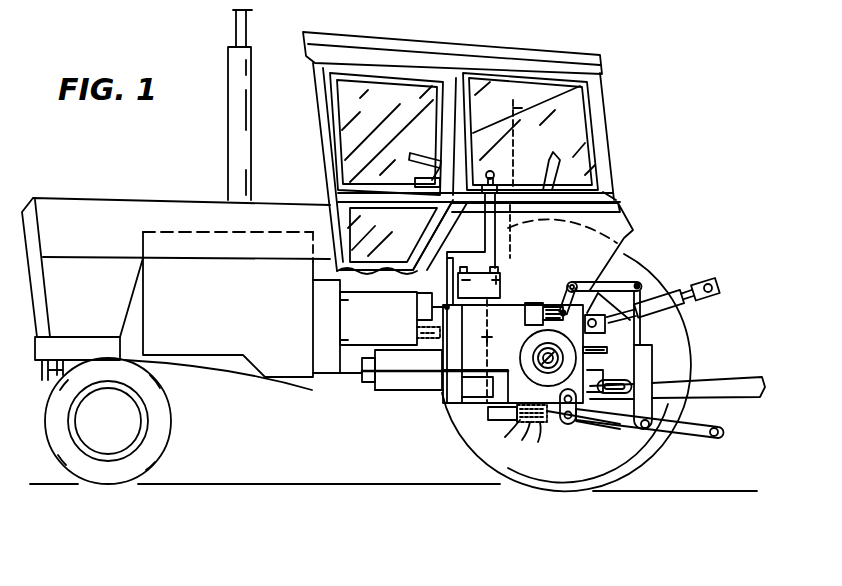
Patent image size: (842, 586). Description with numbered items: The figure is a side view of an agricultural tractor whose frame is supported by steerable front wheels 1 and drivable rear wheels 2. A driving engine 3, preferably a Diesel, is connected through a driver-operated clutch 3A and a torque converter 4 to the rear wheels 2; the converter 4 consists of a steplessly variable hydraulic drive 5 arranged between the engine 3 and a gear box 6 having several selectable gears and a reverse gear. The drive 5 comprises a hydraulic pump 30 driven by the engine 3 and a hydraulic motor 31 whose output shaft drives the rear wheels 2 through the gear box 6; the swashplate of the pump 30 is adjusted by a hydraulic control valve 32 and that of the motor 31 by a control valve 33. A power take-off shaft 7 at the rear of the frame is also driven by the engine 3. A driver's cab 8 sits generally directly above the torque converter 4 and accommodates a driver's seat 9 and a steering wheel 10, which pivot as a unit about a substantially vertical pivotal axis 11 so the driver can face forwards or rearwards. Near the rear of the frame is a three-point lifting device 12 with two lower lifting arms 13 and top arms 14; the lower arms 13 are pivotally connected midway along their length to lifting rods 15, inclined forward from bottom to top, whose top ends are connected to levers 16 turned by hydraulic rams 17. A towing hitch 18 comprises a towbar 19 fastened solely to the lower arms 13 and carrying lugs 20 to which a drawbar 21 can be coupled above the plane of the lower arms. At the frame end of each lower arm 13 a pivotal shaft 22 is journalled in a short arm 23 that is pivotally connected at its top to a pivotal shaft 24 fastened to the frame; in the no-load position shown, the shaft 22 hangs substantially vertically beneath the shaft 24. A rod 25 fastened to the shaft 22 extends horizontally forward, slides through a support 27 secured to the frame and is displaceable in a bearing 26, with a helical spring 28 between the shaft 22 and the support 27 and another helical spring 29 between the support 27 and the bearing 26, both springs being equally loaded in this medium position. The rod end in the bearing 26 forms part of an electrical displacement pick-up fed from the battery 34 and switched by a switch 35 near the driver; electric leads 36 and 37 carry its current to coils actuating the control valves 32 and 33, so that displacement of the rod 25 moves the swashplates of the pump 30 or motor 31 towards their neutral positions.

The front wheels 1 is at (158, 464).
The rear wheels 2 is at (527, 488).
The driving engine 3 is at (227, 366).
The driver-operated clutch 3A is at (327, 375).
The torque converter 4 is at (379, 405).
The steplessly variable hydraulic drive 5 is at (360, 370).
The gear box 6 is at (513, 351).
The power take-off shaft 7 is at (598, 342).
The driver's cab 8 is at (598, 97).
The driver's seat 9 is at (558, 152).
The steering wheel 10 is at (427, 155).
The pivotal axis 11 is at (518, 110).
The three-point lifting device 12 is at (710, 282).
The lower lifting arms 13 is at (717, 437).
The top arms 14 is at (708, 297).
The lifting rods 15 is at (657, 348).
The levers 16 is at (597, 282).
The hydraulic rams 17 is at (537, 302).
The towing hitch 18 is at (605, 352).
The towbar 19 is at (599, 357).
The lugs 20 is at (657, 373).
The drawbar 21 is at (737, 383).
The pivotal shaft 22 is at (583, 420).
The short arm 23 is at (598, 428).
The pivotal shaft 24 is at (562, 397).
The rod 25 is at (527, 420).
The bearing 26 is at (488, 412).
The support 27 is at (540, 425).
The helical spring 28 is at (552, 425).
The helical spring 29 is at (525, 428).
The hydraulic pump 30 is at (348, 303).
The hydraulic motor 31 is at (398, 393).
The hydraulic control valve 32 is at (415, 317).
The control valve 33 is at (366, 381).
The battery 34 is at (493, 281).
The switch 35 is at (500, 176).
The electric lead 36 is at (437, 296).
The electric lead 37 is at (420, 372).